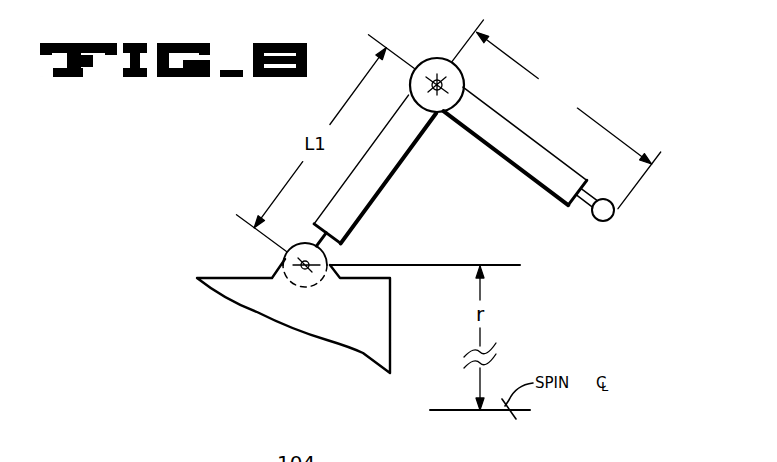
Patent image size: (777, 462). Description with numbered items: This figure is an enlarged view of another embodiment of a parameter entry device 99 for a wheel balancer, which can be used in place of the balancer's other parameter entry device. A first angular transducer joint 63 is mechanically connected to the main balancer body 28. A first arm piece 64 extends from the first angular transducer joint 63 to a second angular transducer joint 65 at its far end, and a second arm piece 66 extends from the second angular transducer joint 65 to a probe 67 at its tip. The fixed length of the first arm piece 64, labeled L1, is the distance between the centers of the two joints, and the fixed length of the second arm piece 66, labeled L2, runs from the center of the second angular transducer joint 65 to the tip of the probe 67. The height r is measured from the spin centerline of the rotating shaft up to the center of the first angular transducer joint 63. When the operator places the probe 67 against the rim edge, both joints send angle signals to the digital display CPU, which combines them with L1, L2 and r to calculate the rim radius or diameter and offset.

The main balancer body 28 is at (262, 306).
The first angular transducer joint 63 is at (328, 253).
The first arm piece 64 is at (396, 165).
The second angular transducer joint 65 is at (437, 74).
The second arm piece 66 is at (484, 129).
The probe 67 is at (598, 221).
The parameter entry device 99 is at (525, 60).